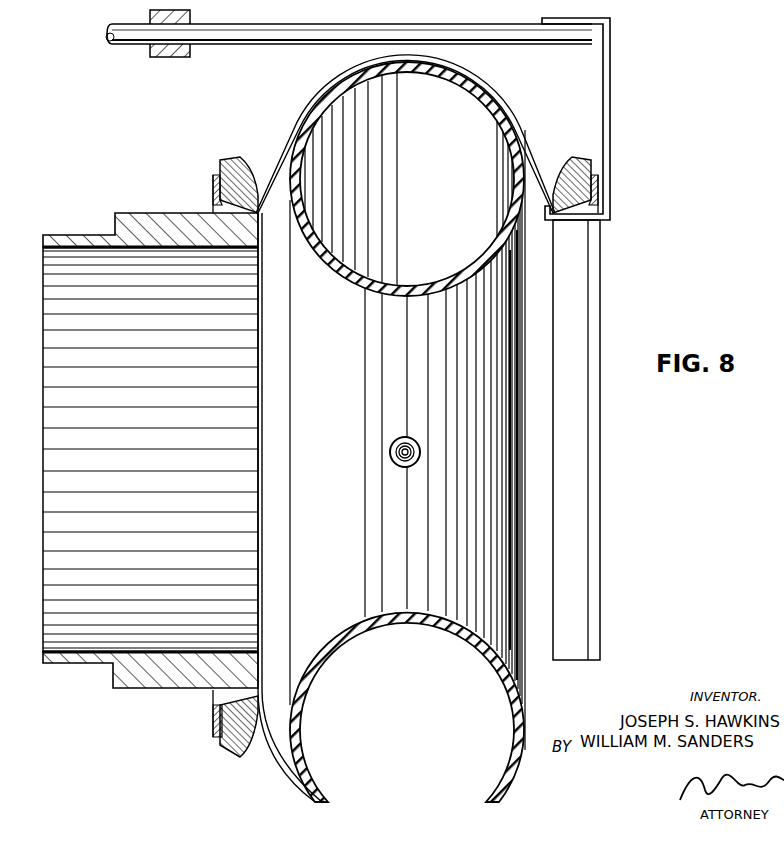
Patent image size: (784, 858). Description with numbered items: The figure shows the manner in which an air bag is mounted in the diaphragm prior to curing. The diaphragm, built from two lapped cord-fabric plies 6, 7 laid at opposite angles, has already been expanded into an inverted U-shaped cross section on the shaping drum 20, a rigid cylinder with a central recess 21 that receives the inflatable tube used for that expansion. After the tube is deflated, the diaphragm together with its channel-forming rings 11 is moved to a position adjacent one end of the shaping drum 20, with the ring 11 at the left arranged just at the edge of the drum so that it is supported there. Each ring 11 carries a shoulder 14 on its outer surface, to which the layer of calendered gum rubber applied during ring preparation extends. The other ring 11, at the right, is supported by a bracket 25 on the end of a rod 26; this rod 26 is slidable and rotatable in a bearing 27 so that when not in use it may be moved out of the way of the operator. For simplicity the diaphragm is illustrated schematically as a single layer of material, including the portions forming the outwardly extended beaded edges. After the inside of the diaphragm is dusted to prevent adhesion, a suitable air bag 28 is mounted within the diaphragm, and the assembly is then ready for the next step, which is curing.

The ply 6 is at (510, 120).
The ply 7 is at (297, 783).
The channel-forming ring 11 is at (233, 160).
The shoulder 14 is at (218, 177).
The shaping drum 20 is at (140, 222).
The recess 21 is at (114, 232).
The bracket 25 is at (610, 108).
The rod 26 is at (251, 32).
The bearing 27 is at (158, 56).
The air bag 28 is at (506, 152).